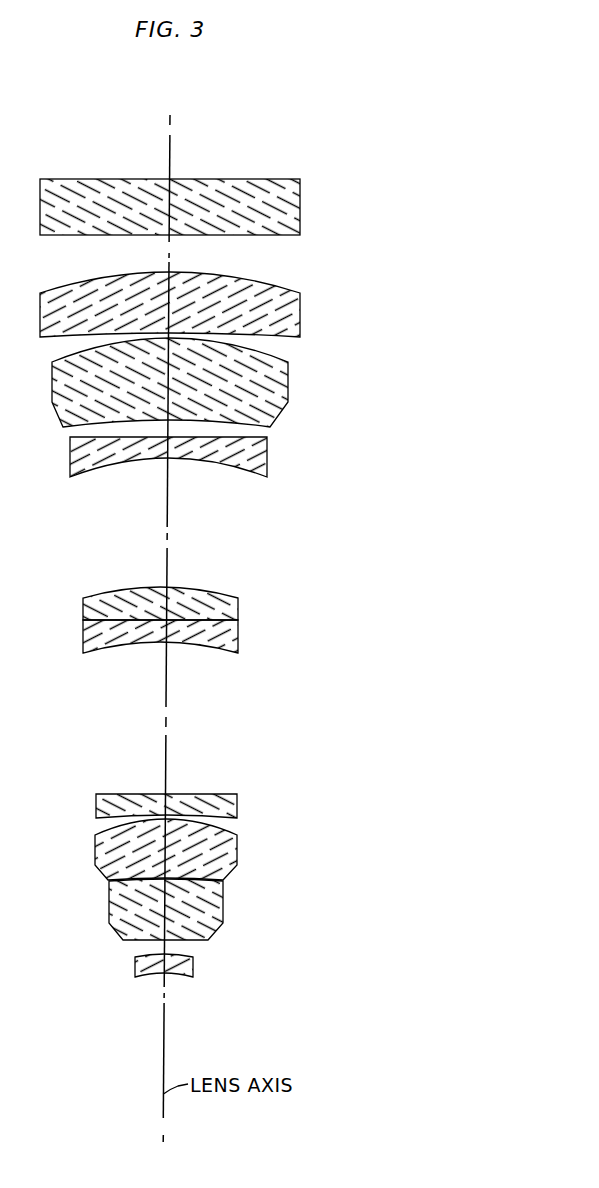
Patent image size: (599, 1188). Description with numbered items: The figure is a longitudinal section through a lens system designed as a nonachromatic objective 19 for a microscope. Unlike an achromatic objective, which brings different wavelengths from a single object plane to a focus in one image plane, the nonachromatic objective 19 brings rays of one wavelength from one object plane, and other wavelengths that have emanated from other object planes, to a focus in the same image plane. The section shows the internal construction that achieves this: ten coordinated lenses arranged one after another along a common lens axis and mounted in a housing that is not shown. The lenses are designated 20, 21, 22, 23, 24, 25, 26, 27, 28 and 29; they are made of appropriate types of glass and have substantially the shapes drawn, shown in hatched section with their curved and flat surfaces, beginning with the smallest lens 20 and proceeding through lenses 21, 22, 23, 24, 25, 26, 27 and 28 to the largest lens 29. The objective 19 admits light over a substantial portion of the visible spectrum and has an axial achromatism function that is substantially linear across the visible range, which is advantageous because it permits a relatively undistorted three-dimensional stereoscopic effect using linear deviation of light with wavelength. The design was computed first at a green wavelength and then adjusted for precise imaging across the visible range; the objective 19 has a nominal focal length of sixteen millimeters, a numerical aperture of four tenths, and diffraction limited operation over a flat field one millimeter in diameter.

The nonachromatic objective 19 is at (280, 535).
The lens 20 is at (193, 965).
The lens 21 is at (223, 905).
The lens 22 is at (237, 850).
The lens 23 is at (237, 811).
The lens 24 is at (238, 637).
The lens 25 is at (238, 608).
The lens 26 is at (267, 456).
The lens 27 is at (288, 401).
The lens 28 is at (300, 319).
The lens 29 is at (300, 211).